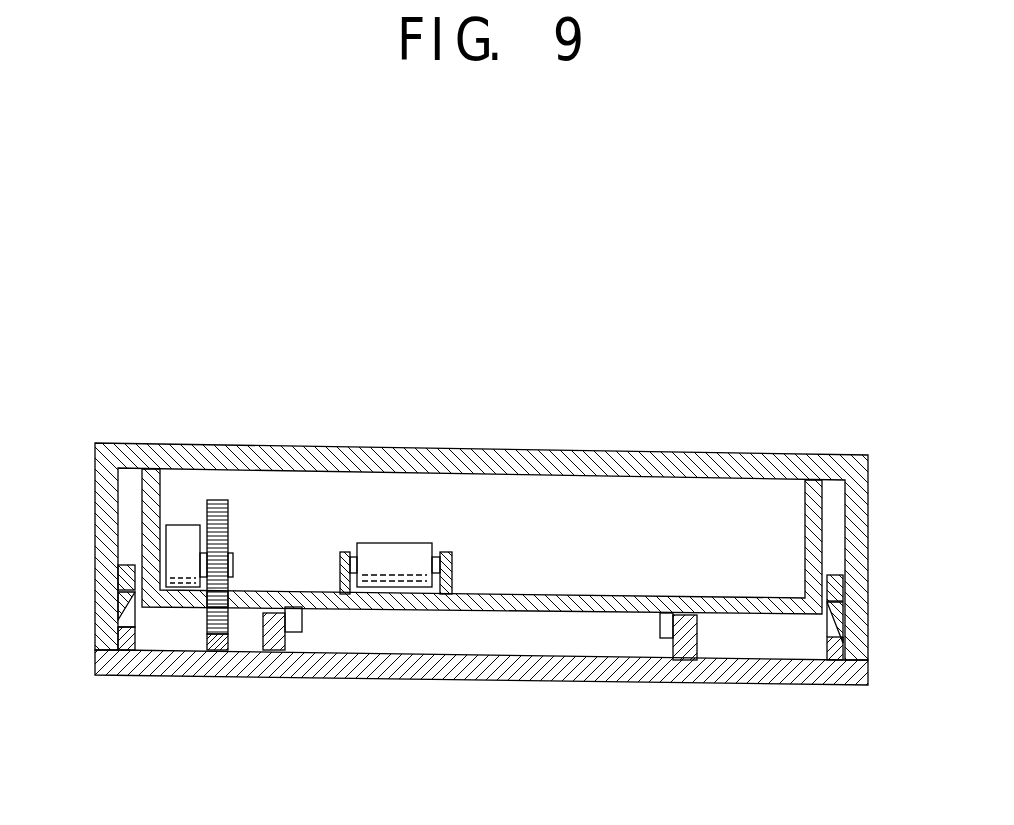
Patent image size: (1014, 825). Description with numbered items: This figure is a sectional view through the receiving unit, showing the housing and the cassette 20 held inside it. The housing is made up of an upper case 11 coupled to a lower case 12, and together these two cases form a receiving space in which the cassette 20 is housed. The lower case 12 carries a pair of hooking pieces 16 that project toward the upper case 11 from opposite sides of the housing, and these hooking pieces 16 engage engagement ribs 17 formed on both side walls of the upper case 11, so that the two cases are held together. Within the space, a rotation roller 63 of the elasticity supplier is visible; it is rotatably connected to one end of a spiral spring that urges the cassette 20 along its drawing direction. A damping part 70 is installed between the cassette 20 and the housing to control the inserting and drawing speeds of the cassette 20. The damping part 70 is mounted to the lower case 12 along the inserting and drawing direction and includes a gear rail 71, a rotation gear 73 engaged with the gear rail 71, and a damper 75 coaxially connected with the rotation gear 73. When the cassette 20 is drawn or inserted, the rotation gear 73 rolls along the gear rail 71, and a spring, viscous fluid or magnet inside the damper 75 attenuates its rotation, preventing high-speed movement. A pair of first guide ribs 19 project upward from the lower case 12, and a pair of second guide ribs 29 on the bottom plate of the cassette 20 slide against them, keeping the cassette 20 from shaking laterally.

The upper case 11 is at (795, 457).
The lower case 12 is at (772, 667).
The hooking pieces 16 is at (118, 594).
The engagement ribs 17 is at (118, 640).
The first guide ribs 19 is at (283, 645).
The cassette 20 is at (537, 616).
The second guide ribs 29 is at (300, 630).
The rotation roller 63 is at (416, 556).
The damping part 70 is at (197, 645).
The gear rail 71 is at (218, 637).
The rotation gear 73 is at (206, 620).
The damper 75 is at (170, 588).